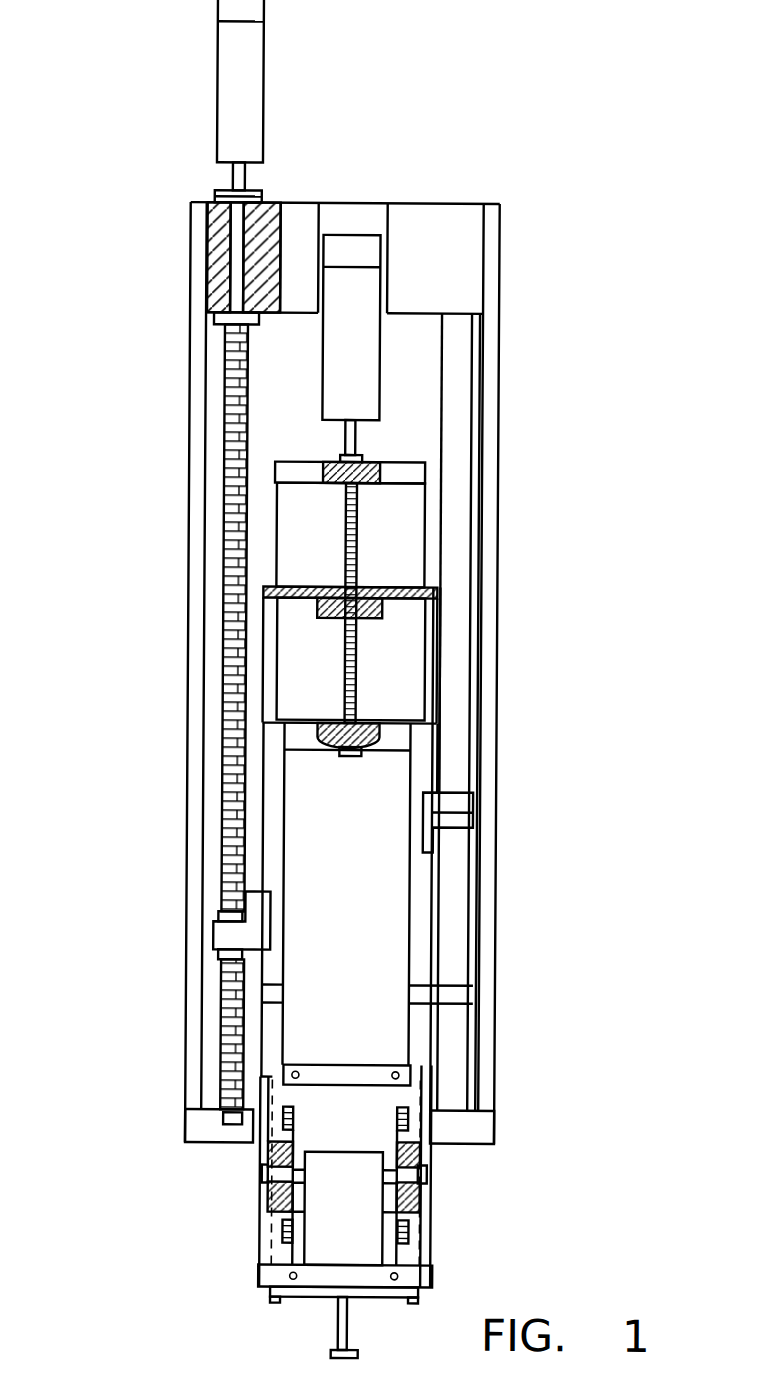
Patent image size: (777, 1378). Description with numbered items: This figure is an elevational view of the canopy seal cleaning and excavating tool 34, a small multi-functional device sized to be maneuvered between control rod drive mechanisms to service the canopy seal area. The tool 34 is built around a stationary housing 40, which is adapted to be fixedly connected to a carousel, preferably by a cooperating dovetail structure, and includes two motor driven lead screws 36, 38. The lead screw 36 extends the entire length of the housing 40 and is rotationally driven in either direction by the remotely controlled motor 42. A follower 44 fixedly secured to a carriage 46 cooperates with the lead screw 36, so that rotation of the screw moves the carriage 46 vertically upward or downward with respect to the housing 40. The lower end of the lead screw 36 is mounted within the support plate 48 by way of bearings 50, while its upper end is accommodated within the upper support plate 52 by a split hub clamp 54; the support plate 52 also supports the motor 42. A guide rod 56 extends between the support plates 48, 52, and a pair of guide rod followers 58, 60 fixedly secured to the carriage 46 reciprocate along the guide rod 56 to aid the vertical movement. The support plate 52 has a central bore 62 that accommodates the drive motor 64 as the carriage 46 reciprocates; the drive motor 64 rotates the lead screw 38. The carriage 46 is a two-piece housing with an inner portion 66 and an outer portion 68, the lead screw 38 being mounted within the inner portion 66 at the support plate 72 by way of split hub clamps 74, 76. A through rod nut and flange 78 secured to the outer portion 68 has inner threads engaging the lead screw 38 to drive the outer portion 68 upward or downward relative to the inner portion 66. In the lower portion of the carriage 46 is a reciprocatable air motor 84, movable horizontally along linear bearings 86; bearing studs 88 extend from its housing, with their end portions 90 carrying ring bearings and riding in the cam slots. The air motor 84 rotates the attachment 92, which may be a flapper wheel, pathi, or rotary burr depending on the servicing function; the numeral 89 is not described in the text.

The canopy seal cleaning and excavating tool 34 is at (144, 332).
The lead screw 36 is at (223, 621).
The lead screw 38 is at (345, 550).
The stationary housing 40 is at (188, 779).
The motor 42 is at (214, 91).
The follower 44 is at (215, 940).
The carriage 46 is at (263, 668).
The support plate 48 is at (216, 1144).
The bearings 50 is at (226, 1120).
The upper support plate 52 is at (301, 212).
The split hub clamp 54 is at (212, 195).
The guide rod 56 is at (482, 459).
The guide rod follower 58 is at (458, 804).
The guide rod follower 60 is at (485, 1038).
The central bore 62 is at (367, 212).
The drive motor 64 is at (352, 348).
The inner portion 66 is at (424, 515).
The outer portion 68 is at (440, 657).
The support plate 72 is at (305, 465).
The split hub clamp 74 is at (362, 722).
The split hub clamp 76 is at (365, 459).
The through rod nut and flange 78 is at (330, 618).
The air motor 84 is at (333, 1247).
The linear bearings 86 is at (398, 1116).
The bearing stud 88 is at (400, 1157).
The lower bushing 89 is at (292, 1197).
The end portion 90 is at (265, 1173).
The attachment 92 is at (362, 1350).